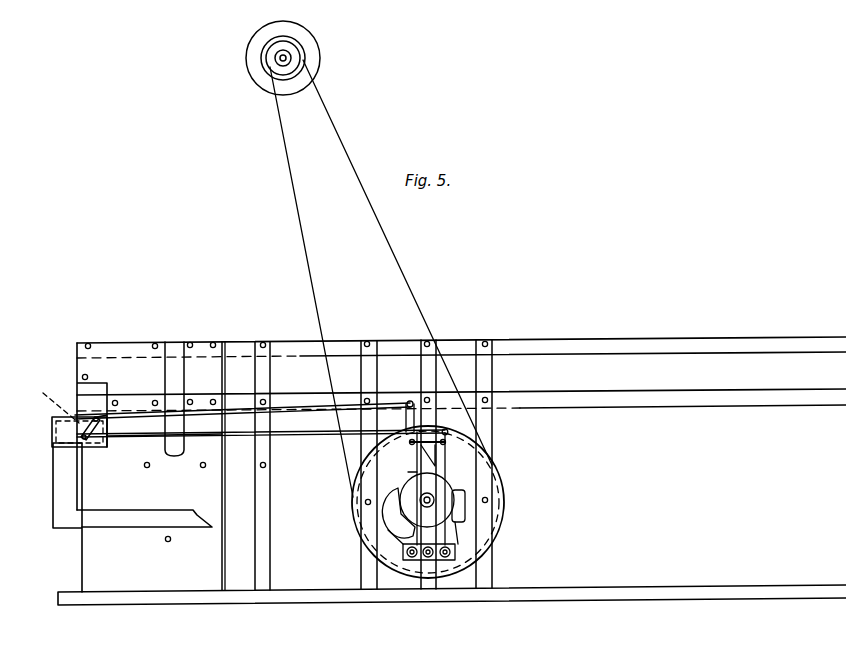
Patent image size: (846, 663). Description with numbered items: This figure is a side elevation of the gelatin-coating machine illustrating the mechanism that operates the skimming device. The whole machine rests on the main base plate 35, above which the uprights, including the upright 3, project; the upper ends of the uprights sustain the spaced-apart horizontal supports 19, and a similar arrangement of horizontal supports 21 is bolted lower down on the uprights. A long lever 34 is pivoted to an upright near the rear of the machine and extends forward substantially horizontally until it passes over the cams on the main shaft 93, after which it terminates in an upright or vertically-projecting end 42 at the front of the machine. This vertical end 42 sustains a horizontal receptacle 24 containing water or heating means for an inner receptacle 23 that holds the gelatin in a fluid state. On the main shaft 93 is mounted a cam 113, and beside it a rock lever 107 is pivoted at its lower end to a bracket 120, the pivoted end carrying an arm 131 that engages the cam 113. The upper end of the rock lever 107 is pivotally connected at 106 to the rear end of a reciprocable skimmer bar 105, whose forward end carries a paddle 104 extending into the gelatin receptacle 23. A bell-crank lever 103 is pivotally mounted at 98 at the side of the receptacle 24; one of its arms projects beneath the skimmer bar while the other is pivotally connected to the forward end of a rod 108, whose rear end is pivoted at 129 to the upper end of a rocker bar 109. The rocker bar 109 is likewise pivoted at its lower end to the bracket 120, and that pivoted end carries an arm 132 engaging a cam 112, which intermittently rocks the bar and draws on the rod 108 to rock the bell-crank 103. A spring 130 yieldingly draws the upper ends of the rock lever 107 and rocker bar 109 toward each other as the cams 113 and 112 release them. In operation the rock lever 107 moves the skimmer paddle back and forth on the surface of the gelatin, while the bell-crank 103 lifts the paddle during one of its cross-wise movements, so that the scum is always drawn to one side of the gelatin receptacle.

The upright 3 is at (430, 352).
The upper horizontal support 19 is at (652, 338).
The lower horizontal support 21 is at (688, 390).
The inner receptacle 23 is at (50, 403).
The horizontal receptacle 24 is at (57, 442).
The long lever 34 is at (142, 517).
The main base plate 35 is at (610, 590).
The upright end of lever 42 is at (60, 502).
The main shaft 93 is at (438, 494).
The pivot 98 is at (86, 423).
The bell-crank lever 103 is at (80, 428).
The paddle 104 is at (97, 417).
The reciprocable skimmer bar 105 is at (315, 405).
The pivotal connection 106 is at (407, 402).
The rock lever 107 is at (423, 446).
The rod 108 is at (147, 438).
The rocker bar 109 is at (440, 455).
The cam 112 is at (456, 498).
The cam 113 is at (397, 518).
The bracket 120 is at (428, 557).
The pivot 129 is at (447, 431).
The spring 130 is at (411, 470).
The arm 131 is at (390, 533).
The arm 132 is at (458, 526).